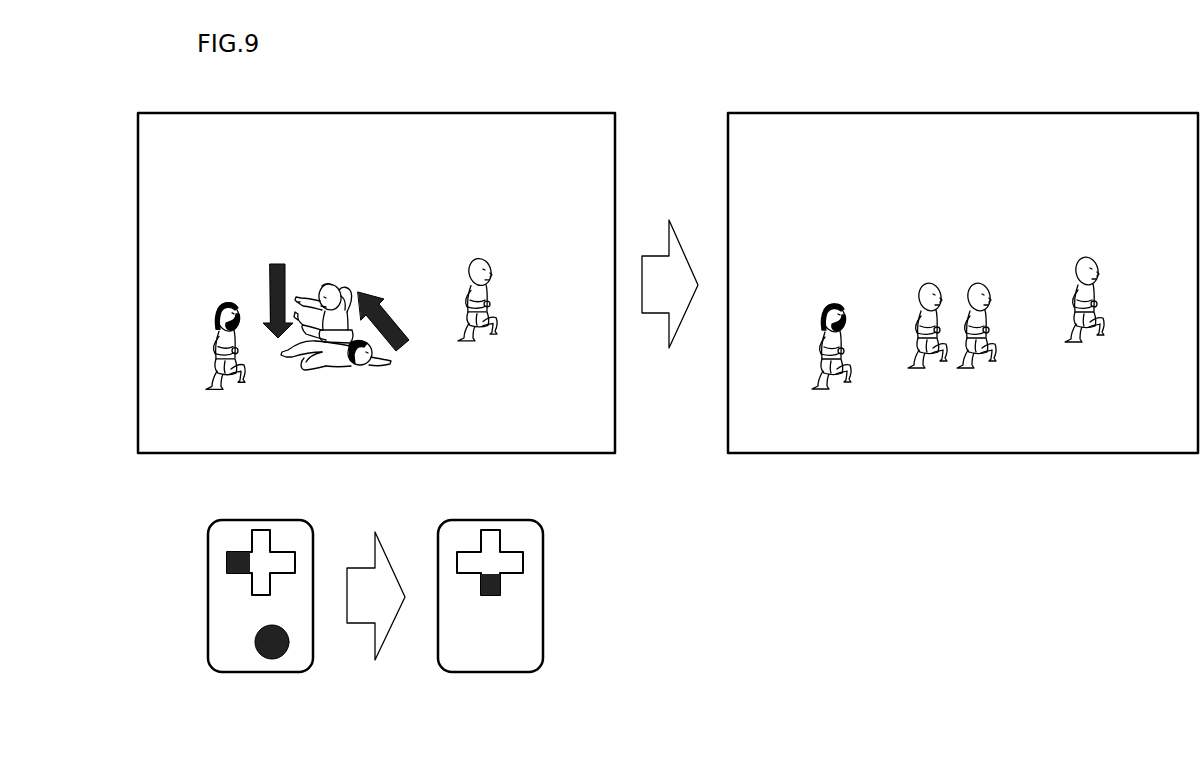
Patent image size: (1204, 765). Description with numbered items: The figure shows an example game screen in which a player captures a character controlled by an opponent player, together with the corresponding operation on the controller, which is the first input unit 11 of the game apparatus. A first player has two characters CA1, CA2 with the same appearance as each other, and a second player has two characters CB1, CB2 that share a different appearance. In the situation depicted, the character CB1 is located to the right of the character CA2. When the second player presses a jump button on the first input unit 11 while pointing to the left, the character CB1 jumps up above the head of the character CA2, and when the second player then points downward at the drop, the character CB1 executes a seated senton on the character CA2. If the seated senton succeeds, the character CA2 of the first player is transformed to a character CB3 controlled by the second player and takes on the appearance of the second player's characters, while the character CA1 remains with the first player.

The first input unit 11 is at (257, 674).
The character CA1 is at (244, 391).
The character CA2 is at (358, 373).
The character CB1 is at (331, 283).
The character CB2 is at (489, 258).
The character CB3 is at (985, 283).